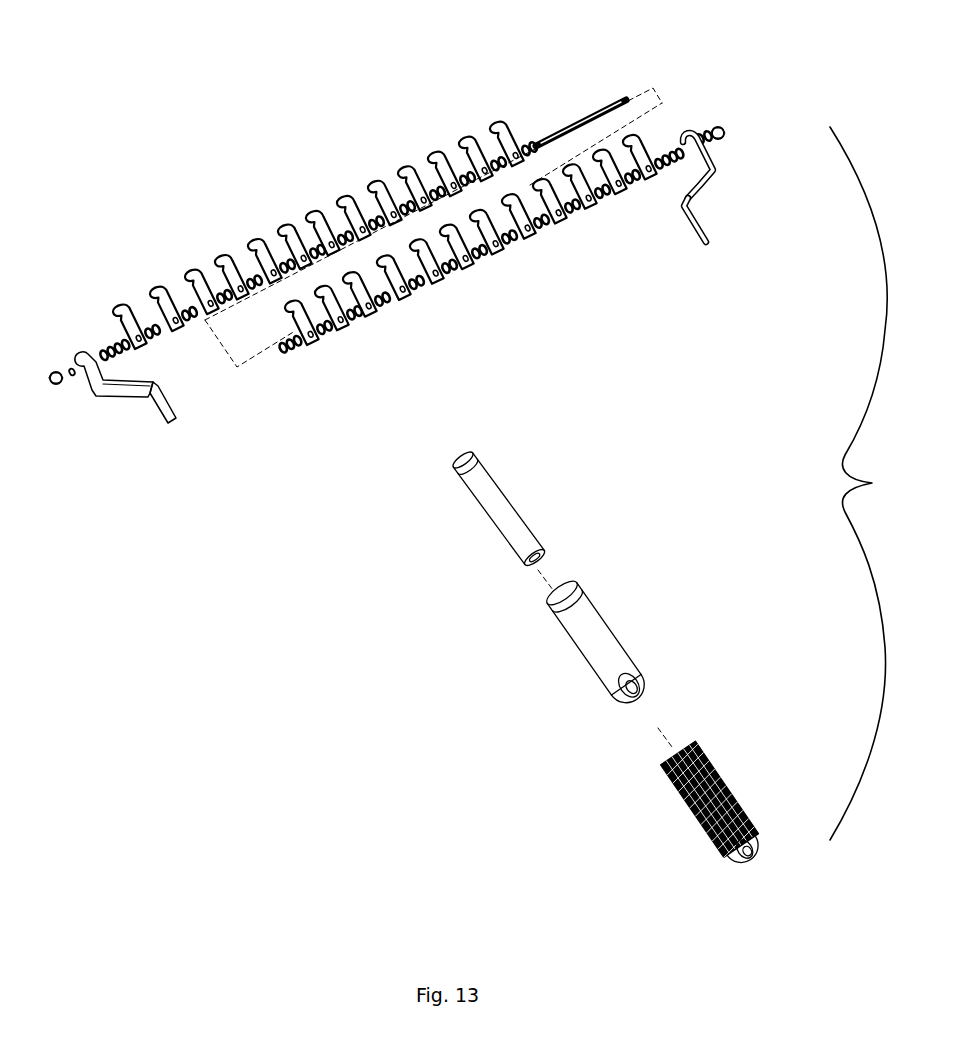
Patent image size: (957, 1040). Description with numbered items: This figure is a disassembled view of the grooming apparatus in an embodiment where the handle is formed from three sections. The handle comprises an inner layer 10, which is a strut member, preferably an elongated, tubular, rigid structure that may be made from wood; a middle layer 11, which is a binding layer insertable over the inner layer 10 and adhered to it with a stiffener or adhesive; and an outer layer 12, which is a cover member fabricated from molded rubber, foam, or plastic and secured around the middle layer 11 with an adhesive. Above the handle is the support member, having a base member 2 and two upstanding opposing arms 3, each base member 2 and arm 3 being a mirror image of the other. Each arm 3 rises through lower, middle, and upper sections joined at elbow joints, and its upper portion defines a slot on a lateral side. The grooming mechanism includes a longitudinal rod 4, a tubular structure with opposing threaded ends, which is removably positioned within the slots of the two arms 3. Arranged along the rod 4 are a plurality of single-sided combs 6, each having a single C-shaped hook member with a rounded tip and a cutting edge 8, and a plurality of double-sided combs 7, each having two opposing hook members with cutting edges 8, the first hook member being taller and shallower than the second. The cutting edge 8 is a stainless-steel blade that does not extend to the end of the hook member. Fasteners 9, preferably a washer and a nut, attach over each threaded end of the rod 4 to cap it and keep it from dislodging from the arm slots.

The base member 2 is at (170, 426).
The upstanding arm 3 is at (113, 400).
The rod 4 is at (585, 108).
The single-sided comb 6 is at (604, 152).
The double-sided comb 7 is at (640, 140).
The cutting edge 8 is at (517, 195).
The fastener 9 is at (730, 128).
The inner layer 10 is at (492, 527).
The middle layer 11 is at (578, 656).
The outer layer 12 is at (626, 722).